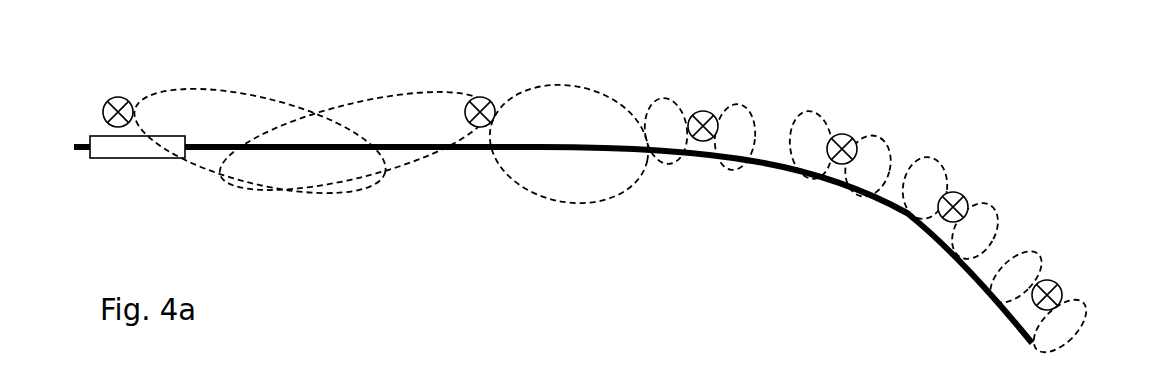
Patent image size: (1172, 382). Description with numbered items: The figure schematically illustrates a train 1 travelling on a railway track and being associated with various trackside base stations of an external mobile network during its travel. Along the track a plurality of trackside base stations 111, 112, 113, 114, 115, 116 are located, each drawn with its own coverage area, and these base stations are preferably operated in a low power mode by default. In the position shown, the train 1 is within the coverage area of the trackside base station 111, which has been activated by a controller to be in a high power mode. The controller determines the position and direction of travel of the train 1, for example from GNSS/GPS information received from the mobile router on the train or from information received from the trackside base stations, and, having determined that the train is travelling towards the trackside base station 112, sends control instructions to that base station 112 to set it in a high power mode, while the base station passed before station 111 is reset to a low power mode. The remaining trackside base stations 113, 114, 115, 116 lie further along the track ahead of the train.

The train 1 is at (142, 155).
The trackside base station 111 is at (130, 98).
The trackside base station 112 is at (478, 96).
The trackside base station 113 is at (708, 111).
The trackside base station 114 is at (851, 135).
The trackside base station 115 is at (962, 193).
The trackside base station 116 is at (1056, 282).